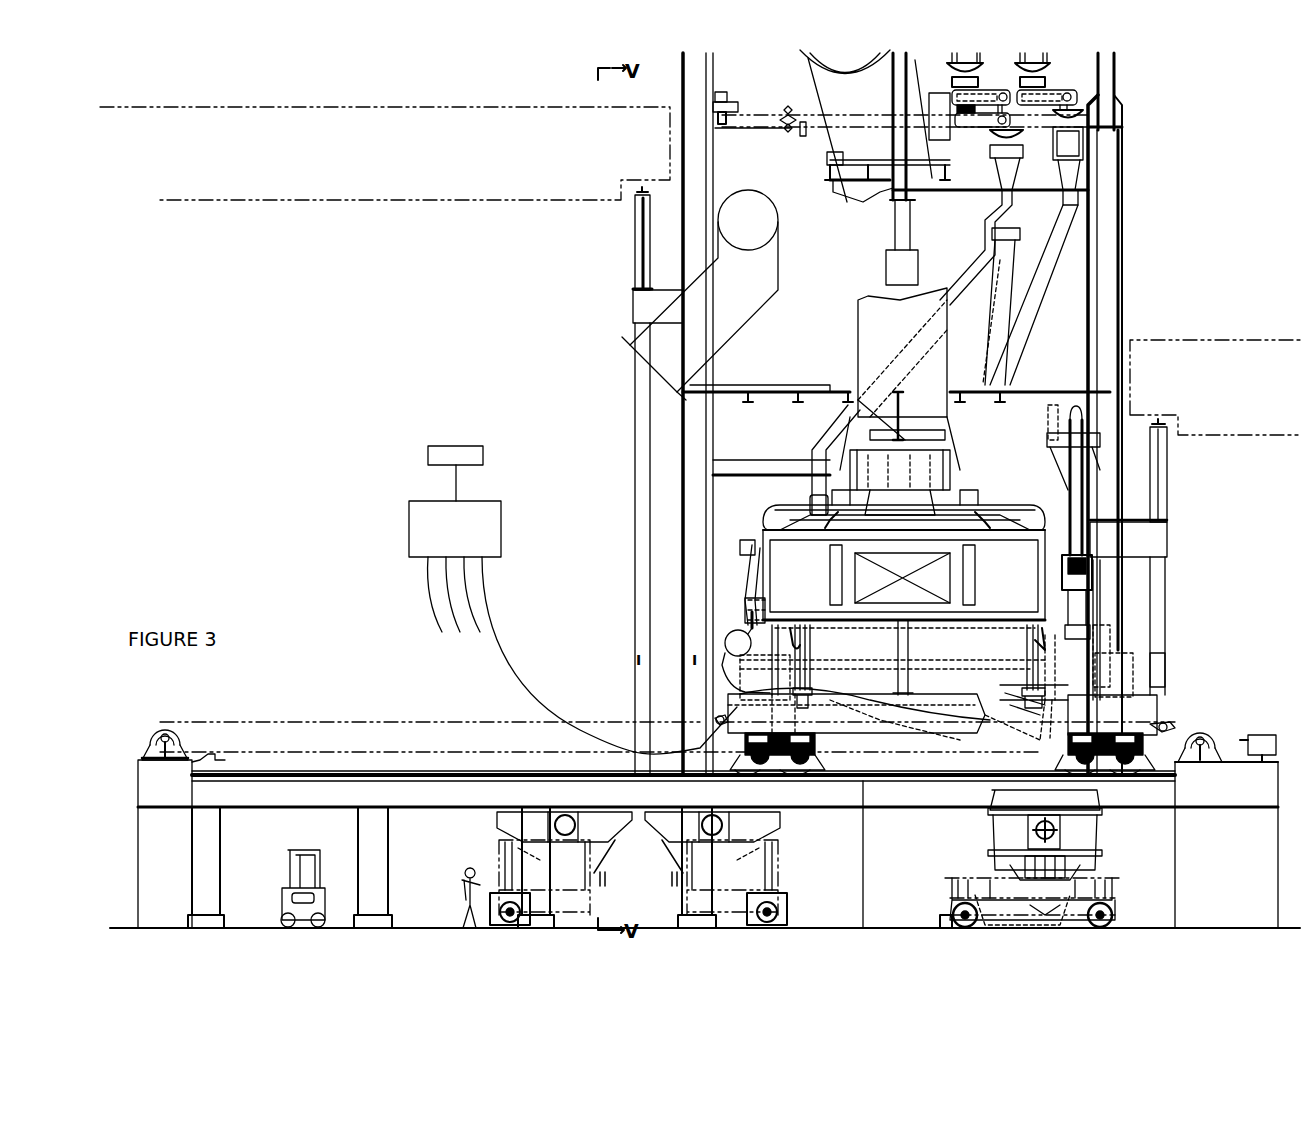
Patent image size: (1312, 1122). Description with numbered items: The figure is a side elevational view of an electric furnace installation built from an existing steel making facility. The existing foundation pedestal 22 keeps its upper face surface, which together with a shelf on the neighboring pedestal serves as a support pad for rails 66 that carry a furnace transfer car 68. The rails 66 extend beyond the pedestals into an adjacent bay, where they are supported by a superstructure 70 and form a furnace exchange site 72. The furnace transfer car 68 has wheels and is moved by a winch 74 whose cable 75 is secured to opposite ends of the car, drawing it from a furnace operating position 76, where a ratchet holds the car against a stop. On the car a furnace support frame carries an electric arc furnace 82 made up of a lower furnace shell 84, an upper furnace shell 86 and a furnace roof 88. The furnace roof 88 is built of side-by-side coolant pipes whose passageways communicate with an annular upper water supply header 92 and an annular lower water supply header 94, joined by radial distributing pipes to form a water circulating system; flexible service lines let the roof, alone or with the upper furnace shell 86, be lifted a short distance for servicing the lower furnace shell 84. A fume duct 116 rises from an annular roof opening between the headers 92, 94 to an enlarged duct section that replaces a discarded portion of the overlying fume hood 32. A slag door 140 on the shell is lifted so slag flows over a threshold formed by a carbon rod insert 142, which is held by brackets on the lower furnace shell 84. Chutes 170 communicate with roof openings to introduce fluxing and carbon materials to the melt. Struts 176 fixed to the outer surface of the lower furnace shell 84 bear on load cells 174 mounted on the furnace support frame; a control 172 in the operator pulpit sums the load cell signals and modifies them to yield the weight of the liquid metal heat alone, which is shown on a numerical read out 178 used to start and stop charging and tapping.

The foundation pedestal 22 is at (1004, 859).
The overlying fume hood 32 is at (850, 98).
The rails 66 is at (288, 770).
The furnace transfer car 68 is at (738, 705).
The superstructure 70 is at (131, 846).
The furnace exchange site 72 is at (538, 655).
The winch 74 is at (1232, 735).
The cable 75 is at (410, 722).
The furnace operating position 76 is at (771, 483).
The electric arc furnace 82 is at (742, 583).
The lower furnace shell 84 is at (950, 665).
The upper furnace shell 86 is at (904, 579).
The furnace roof 88 is at (1005, 518).
The upper water supply header 92 is at (845, 500).
The lower water supply header 94 is at (762, 530).
The fume duct 116 is at (875, 330).
The slag door 140 is at (765, 628).
The carbon rod insert 142 is at (725, 641).
The chutes 170 is at (1000, 325).
The control 172 is at (488, 523).
The load cells 174 is at (815, 694).
The struts 176 is at (812, 652).
The numerical read out 178 is at (478, 453).